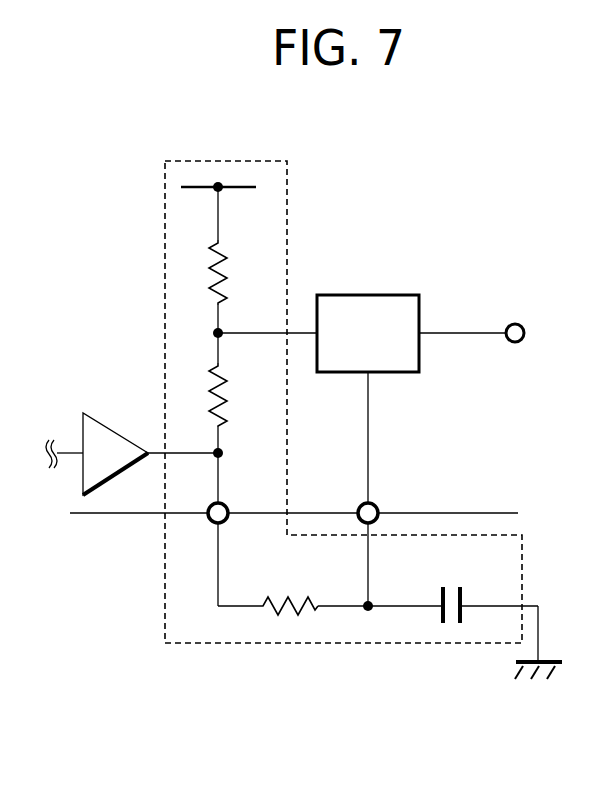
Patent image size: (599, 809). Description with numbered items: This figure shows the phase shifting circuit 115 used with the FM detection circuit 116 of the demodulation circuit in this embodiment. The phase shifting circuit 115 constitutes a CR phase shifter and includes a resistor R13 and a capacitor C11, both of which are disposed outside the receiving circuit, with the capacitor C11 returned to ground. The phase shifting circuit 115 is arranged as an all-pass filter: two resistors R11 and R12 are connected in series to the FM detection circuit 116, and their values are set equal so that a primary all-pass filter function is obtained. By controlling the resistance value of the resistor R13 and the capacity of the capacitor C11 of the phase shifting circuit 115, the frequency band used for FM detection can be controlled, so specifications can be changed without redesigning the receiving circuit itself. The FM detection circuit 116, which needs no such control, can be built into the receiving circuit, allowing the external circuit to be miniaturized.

The phase shifting circuit 115 is at (304, 402).
The FM detection circuit 116 is at (368, 295).
The resistor R11 is at (244, 272).
The resistor R12 is at (244, 395).
The resistor R13 is at (289, 590).
The capacitor C11 is at (450, 587).